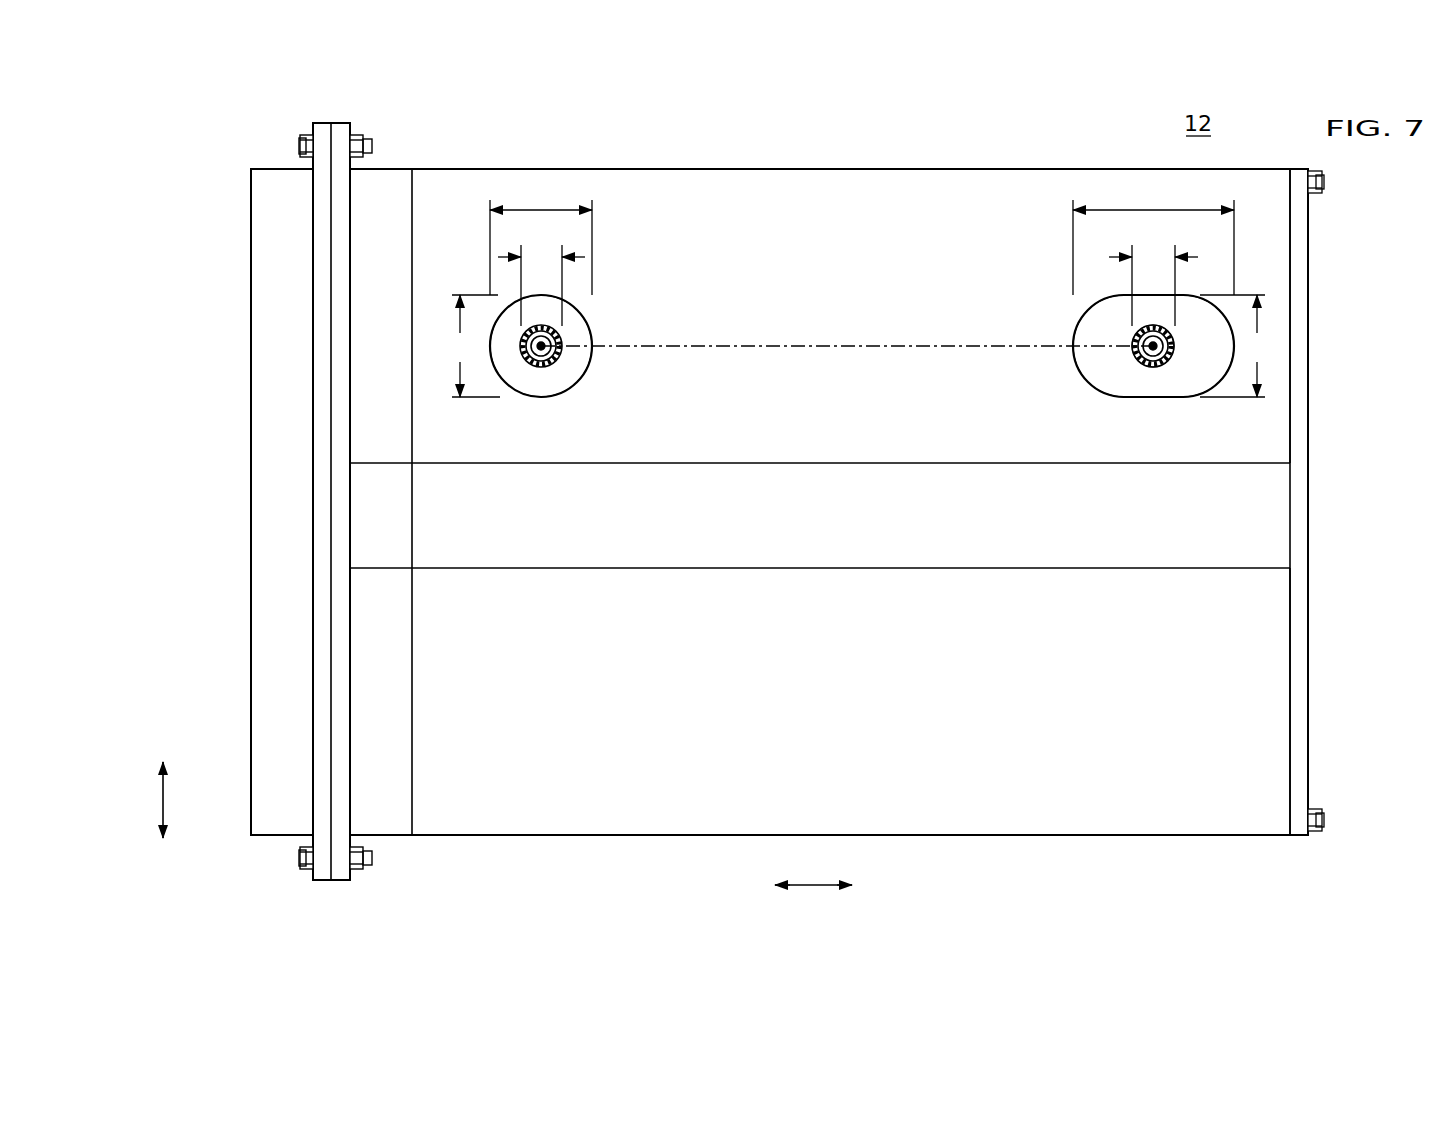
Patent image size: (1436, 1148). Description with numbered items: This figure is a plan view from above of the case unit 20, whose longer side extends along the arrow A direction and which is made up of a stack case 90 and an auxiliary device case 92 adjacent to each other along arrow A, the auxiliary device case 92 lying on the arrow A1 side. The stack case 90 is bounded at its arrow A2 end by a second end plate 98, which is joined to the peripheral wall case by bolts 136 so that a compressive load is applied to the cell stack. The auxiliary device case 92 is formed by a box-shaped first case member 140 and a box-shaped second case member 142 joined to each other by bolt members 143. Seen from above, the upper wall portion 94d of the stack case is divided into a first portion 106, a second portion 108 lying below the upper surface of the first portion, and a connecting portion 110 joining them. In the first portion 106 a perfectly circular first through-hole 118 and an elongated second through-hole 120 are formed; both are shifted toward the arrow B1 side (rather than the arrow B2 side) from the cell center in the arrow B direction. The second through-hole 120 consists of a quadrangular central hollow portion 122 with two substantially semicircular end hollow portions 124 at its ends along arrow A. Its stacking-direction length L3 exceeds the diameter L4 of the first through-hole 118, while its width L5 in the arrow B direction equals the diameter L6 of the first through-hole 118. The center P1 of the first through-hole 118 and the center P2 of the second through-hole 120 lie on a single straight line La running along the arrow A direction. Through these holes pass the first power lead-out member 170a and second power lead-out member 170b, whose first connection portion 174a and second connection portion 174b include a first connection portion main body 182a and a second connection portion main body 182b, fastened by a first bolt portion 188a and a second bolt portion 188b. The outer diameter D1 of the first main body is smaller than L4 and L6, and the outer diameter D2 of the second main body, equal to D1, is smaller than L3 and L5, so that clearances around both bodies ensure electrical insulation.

The case unit 20 is at (1331, 322).
The stack case 90 is at (1311, 620).
The auxiliary device case 92 is at (238, 280).
The upper wall portion 94d is at (1241, 823).
The second end plate 98 is at (1300, 670).
The first portion 106 is at (1267, 267).
The second portion 108 is at (1267, 735).
The connecting portion 110 is at (1267, 520).
The first through-hole 118 is at (503, 378).
The second through-hole 120 is at (1233, 503).
The central hollow portion 122 is at (1155, 382).
The end hollow portion 124 is at (1103, 372).
The bolt 136 is at (1323, 181).
The first case member 140 is at (393, 823).
The second case member 142 is at (270, 511).
The bolt member 143 is at (298, 147).
The first power lead-out member 170a is at (571, 329).
The second power lead-out member 170b is at (1123, 322).
The first connection portion 174a is at (566, 352).
The second connection portion 174b is at (1131, 355).
The first connection portion main body 182a is at (558, 357).
The second connection portion main body 182b is at (1135, 330).
The first bolt portion 188a is at (539, 351).
The second bolt portion 188b is at (1140, 343).
The center of the first through-hole P1 is at (542, 350).
The center of the second through-hole P2 is at (1157, 350).
The straight line La is at (791, 345).
The length of the second through-hole in the stacking direction L3 is at (1153, 240).
The length of the first through-hole in the stacking direction L4 is at (541, 240).
The length of the second through-hole in the arrow B direction L5 is at (1235, 346).
The length of the first through-hole in the arrow B direction L6 is at (473, 346).
The outer diameter of the first connection portion main body D1 is at (541, 279).
The outer diameter of the second connection portion main body D2 is at (1153, 279).
The arrow A direction A is at (813, 870).
The arrow A1 direction A1 is at (766, 885).
The arrow A2 direction A2 is at (860, 885).
The arrow B direction B is at (151, 800).
The arrow B1 direction B1 is at (162, 755).
The arrow B2 direction B2 is at (162, 844).